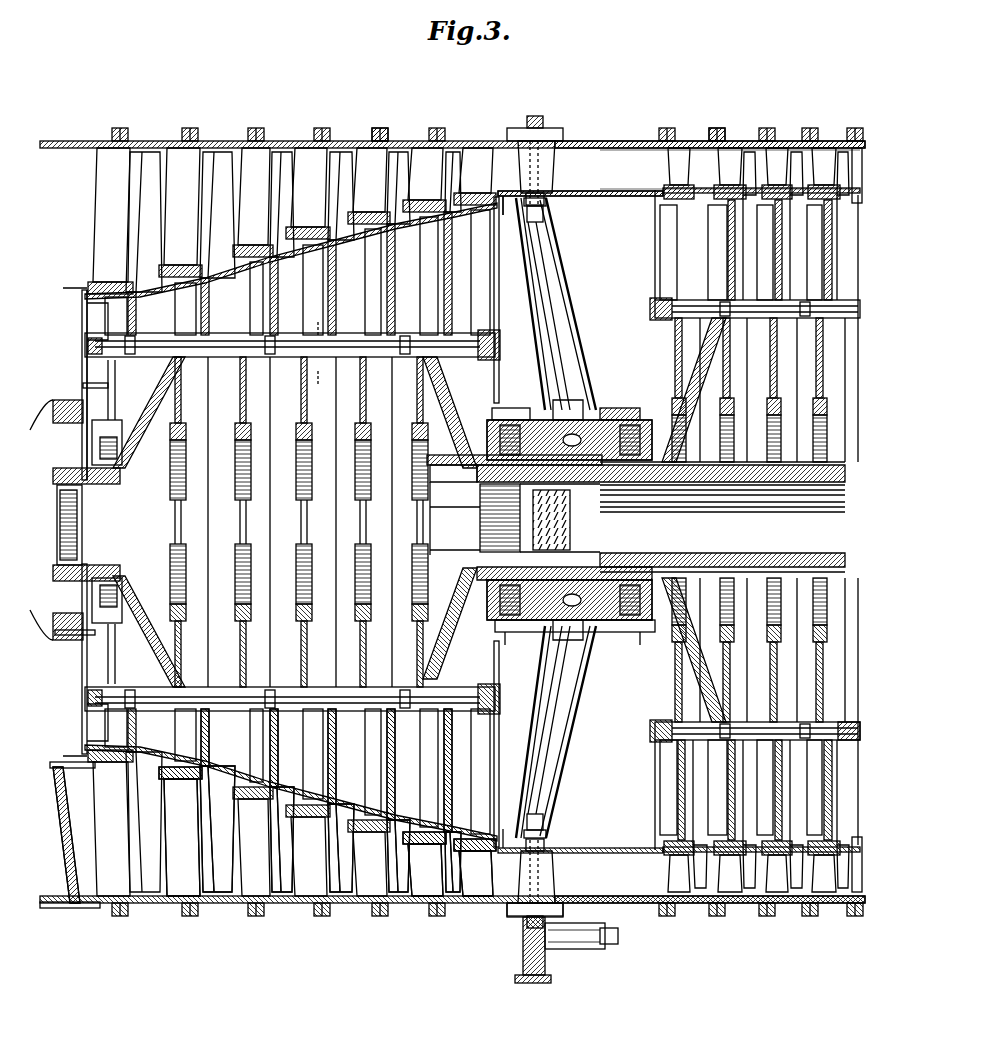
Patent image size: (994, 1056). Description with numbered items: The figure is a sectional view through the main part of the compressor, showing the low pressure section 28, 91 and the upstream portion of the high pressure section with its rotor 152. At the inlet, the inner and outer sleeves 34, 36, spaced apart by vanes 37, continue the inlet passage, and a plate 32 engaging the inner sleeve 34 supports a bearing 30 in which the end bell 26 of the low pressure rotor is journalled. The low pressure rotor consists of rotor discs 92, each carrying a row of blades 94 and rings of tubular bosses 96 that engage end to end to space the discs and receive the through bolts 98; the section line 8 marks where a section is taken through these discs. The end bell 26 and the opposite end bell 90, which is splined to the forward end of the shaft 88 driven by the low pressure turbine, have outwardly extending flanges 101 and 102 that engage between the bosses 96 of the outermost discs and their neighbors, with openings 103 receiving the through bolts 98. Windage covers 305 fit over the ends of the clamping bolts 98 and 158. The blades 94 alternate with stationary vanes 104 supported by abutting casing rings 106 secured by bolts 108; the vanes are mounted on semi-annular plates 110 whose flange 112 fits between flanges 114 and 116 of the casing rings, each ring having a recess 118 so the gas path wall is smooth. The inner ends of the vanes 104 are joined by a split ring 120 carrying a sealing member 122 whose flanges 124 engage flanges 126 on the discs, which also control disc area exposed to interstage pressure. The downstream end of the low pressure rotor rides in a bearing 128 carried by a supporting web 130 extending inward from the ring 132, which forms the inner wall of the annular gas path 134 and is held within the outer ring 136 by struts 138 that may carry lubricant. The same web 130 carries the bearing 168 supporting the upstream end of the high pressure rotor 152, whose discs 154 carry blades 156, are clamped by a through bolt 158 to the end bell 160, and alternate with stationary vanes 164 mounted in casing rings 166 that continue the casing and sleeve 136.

The section line 8- 8 is at (330, 323).
The end bell 26 is at (115, 484).
The low pressure compressor section 28 is at (108, 387).
The bearing 30 is at (105, 434).
The plate 32 is at (85, 642).
The inner sleeve 34 is at (62, 768).
The outer sleeve 36 is at (70, 908).
The vanes 37 is at (70, 830).
The shaft 88 is at (770, 483).
The end bell 90 is at (470, 579).
The low pressure section 91 is at (308, 138).
The rotor discs 92 is at (307, 418).
The blades 94 is at (106, 160).
The tubular bosses 96 is at (287, 690).
The through bolts 98 is at (377, 697).
The flange 101 is at (140, 442).
The flange 102 is at (440, 398).
The openings 103 is at (490, 318).
The stationary vanes 104 is at (140, 152).
The casing rings 106 is at (423, 143).
The bolts 108 is at (380, 130).
The semi-annular plates 110 is at (340, 912).
The flange 112 is at (714, 135).
The flange 114 is at (450, 907).
The flange 116 is at (396, 910).
The recess 118 is at (216, 892).
The split ring 120 is at (217, 800).
The sealing member 122 is at (207, 783).
The flanges 124 is at (480, 900).
The flanges 126 is at (409, 813).
The bearing 128 is at (528, 410).
The supporting web 130 is at (563, 297).
The ring 132 is at (595, 195).
The annular gas path 134 is at (600, 165).
The outer ring 136 is at (585, 146).
The struts 138 is at (525, 148).
The rotor 152 is at (650, 672).
The discs 154 is at (773, 794).
The blades 156 is at (682, 889).
The through bolt 158 is at (834, 724).
The end bell 160 is at (674, 670).
The stationary vanes 164 is at (752, 889).
The casing rings 166 is at (790, 137).
The bearing 168 is at (626, 410).
The windage covers 305 is at (653, 313).